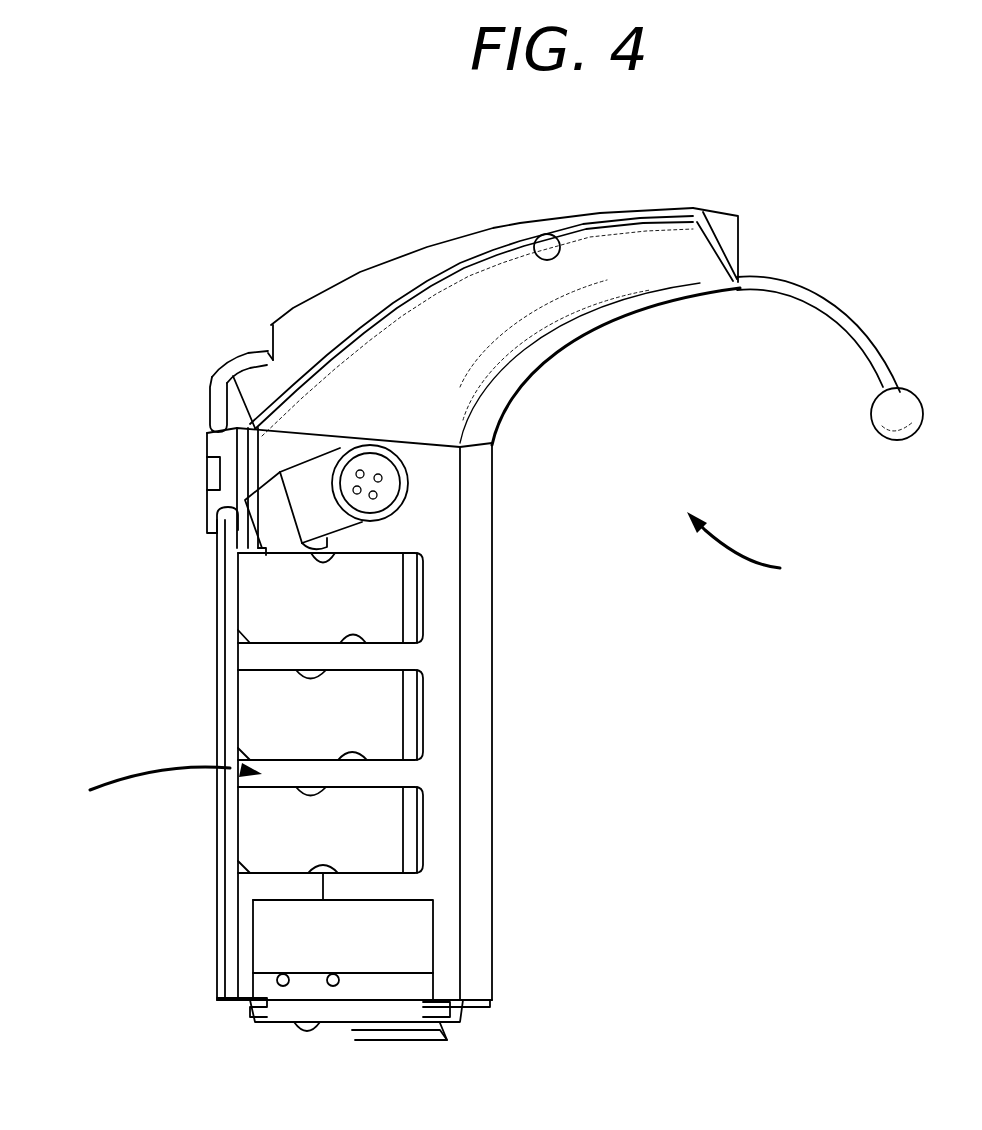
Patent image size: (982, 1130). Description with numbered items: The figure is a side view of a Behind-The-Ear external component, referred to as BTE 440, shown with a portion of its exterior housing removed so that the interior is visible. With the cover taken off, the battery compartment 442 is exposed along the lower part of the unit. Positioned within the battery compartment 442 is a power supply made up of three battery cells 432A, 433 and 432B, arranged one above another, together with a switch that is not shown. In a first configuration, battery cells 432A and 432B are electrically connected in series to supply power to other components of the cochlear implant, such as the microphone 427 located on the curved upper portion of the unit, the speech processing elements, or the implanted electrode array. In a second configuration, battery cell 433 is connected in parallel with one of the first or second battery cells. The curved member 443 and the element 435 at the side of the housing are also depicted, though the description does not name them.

The microphone 427 is at (540, 238).
The push button 435 is at (211, 373).
The ear hook with ball tip 443 is at (853, 346).
The BTE 440 is at (764, 556).
The battery compartment 442 is at (151, 790).
The battery cell 432A is at (377, 603).
The battery cell 433 is at (377, 720).
The battery cell 432B is at (377, 836).